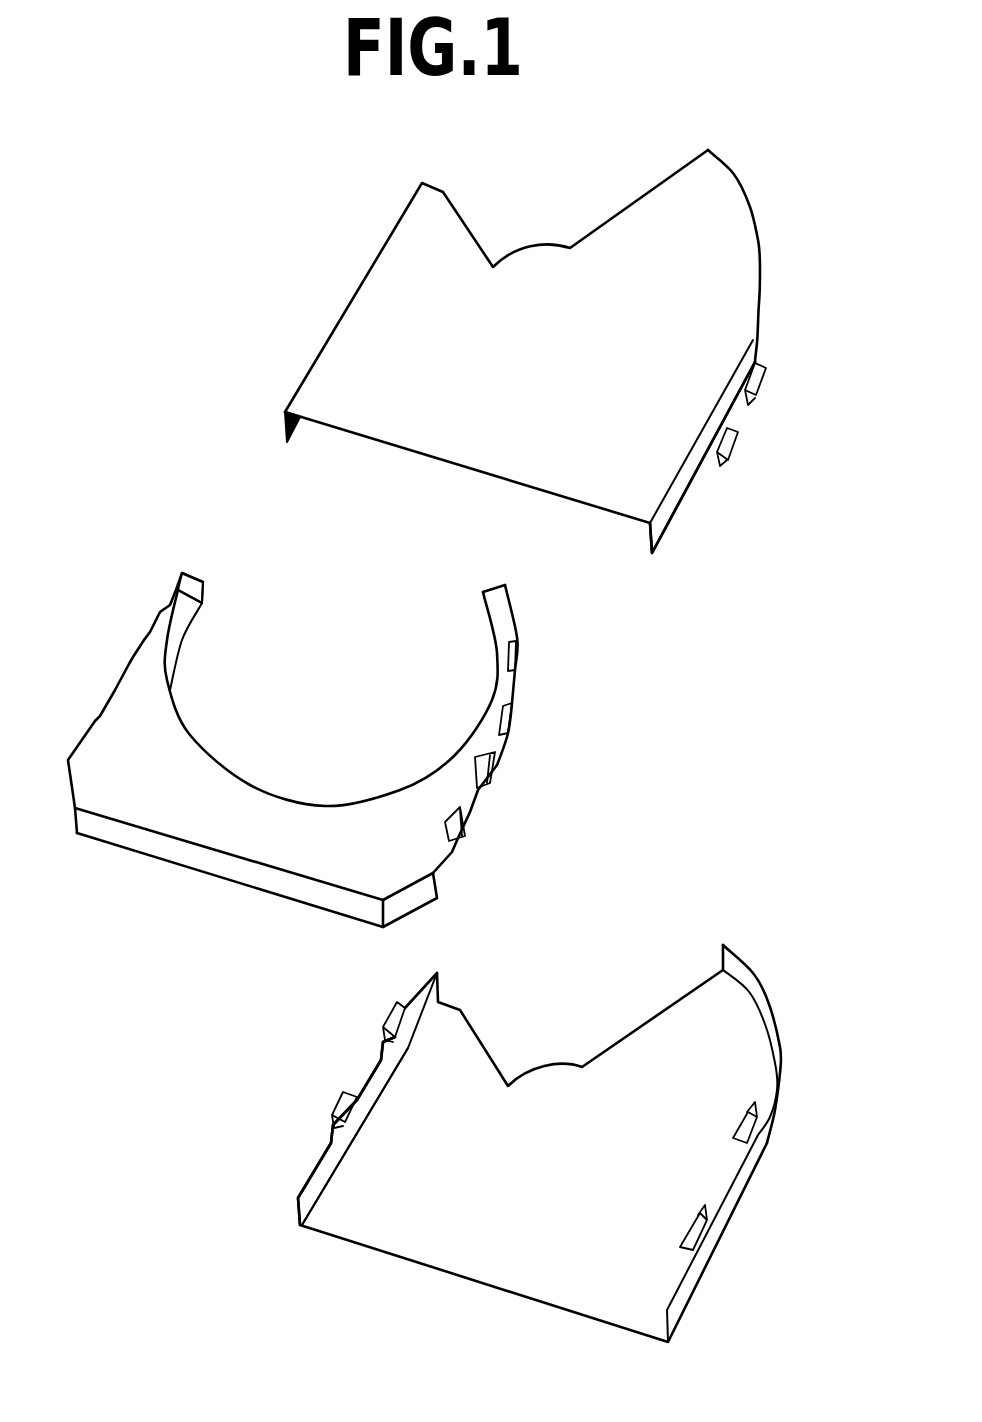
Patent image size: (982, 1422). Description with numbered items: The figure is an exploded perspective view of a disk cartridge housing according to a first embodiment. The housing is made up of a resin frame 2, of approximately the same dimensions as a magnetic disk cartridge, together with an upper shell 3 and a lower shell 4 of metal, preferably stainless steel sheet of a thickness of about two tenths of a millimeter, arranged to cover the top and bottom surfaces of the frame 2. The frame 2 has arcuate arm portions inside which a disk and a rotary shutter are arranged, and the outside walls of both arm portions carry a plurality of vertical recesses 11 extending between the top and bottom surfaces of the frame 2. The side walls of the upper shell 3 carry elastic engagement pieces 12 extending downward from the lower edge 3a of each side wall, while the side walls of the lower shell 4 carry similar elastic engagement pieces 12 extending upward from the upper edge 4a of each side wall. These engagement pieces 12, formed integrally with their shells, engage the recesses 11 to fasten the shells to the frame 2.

The resin frame 2 is at (203, 855).
The upper shell 3 is at (641, 218).
The lower edge 3a is at (298, 426).
The lower shell 4 is at (480, 1263).
The upper edge 4a is at (307, 1180).
The vertical recesses 11 is at (176, 592).
The elastic engagement pieces 12 is at (766, 373).